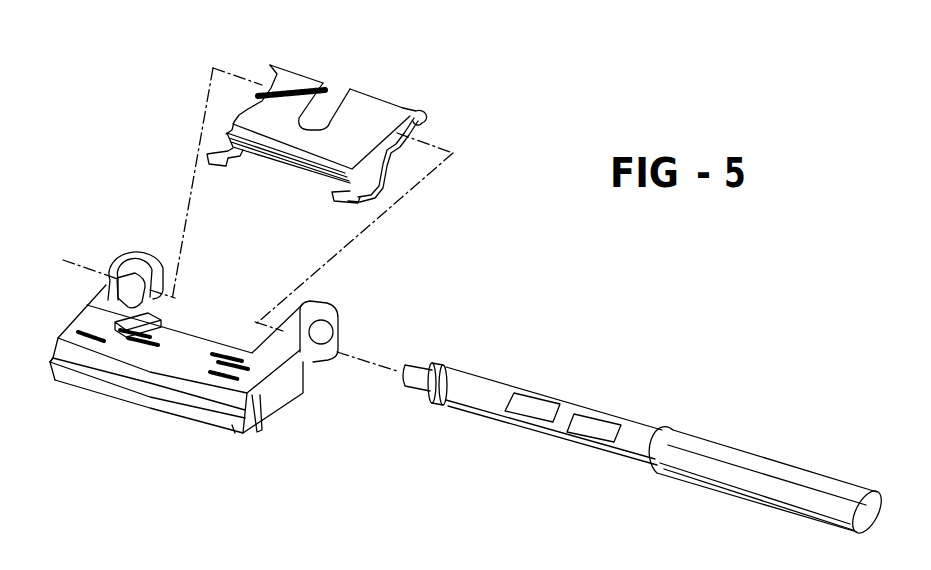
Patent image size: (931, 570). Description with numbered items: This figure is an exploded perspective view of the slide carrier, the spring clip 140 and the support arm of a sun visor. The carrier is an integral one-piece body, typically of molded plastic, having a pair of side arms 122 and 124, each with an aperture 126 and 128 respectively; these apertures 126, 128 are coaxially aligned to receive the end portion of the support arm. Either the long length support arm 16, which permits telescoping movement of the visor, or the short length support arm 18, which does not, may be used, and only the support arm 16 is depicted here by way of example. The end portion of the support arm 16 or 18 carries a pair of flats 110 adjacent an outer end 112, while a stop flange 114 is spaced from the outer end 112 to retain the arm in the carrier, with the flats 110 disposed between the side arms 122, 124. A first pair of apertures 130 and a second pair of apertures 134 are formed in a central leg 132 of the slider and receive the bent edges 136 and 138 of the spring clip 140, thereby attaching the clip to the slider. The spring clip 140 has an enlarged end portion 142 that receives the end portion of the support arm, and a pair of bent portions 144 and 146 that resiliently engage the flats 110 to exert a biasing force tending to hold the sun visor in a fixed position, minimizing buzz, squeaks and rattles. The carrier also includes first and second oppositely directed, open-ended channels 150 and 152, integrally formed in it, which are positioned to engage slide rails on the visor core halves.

The long length support arm 16 is at (645, 408).
The short length support arm 18 is at (645, 408).
The flats 110 is at (597, 424).
The outer end 112 is at (408, 387).
The stop flange 114 is at (437, 366).
The side arm 122 is at (208, 350).
The side arm 124 is at (97, 315).
The aperture 126 is at (338, 328).
The aperture 128 is at (117, 277).
The first pair of apertures 130 is at (233, 355).
The central leg 132 is at (64, 352).
The second pair of apertures 134 is at (205, 378).
The bent edge 136 is at (208, 157).
The bent edge 138 is at (255, 136).
The spring clip 140 is at (331, 127).
The enlarged end portion 142 is at (423, 120).
The bent portion 144 is at (381, 99).
The bent portion 146 is at (298, 82).
The first open ended channel 150 is at (237, 425).
The second open ended channel 152 is at (258, 430).